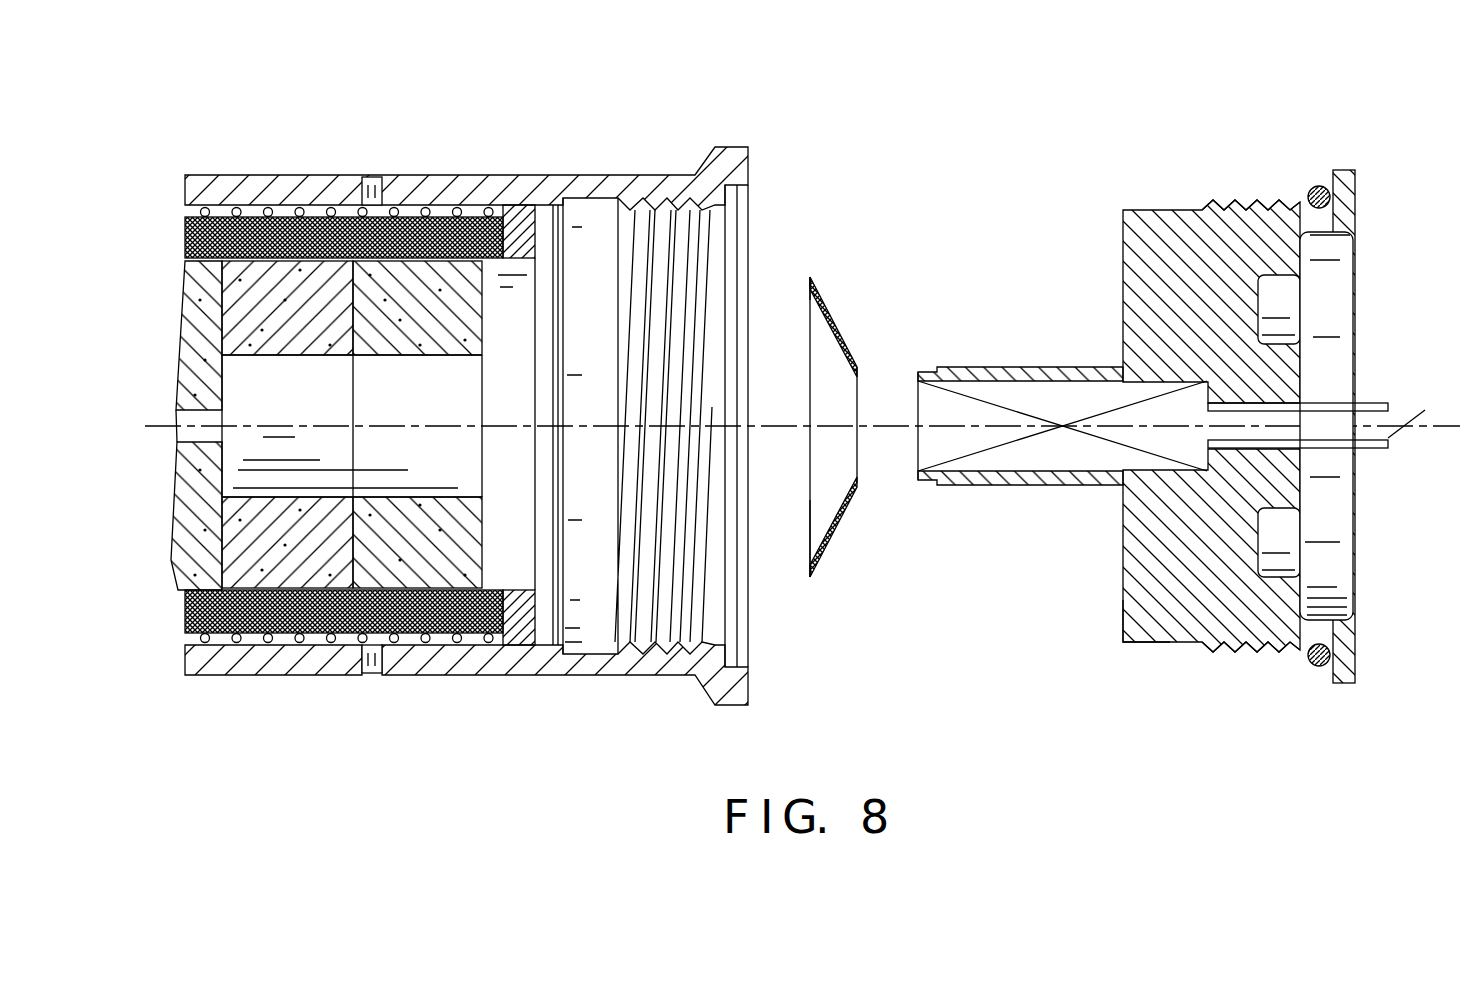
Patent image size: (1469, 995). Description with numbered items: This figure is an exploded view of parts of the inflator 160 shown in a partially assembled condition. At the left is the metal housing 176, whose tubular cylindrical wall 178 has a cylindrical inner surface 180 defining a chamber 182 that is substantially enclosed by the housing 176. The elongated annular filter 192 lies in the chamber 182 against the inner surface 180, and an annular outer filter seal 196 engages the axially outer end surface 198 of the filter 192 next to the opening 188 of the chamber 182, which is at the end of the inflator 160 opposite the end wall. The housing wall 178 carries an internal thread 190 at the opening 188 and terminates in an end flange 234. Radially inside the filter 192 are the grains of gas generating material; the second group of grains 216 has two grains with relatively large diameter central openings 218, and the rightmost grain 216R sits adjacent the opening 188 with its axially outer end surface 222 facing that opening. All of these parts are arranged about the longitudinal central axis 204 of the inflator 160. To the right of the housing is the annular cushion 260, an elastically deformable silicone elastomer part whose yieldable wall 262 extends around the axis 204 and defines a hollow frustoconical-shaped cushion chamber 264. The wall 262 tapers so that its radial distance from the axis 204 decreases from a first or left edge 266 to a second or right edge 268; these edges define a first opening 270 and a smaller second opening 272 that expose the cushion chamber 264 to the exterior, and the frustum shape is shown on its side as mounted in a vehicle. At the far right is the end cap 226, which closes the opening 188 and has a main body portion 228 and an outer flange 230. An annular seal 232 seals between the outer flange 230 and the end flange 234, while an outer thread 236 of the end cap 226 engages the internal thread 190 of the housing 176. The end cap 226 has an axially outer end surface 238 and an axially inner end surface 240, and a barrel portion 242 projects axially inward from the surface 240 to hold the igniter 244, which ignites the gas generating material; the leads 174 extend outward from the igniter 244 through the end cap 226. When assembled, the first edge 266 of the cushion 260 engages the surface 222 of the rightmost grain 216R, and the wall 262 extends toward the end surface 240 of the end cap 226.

The inflator 160 is at (222, 117).
The leads 174 is at (1385, 400).
The housing 176 is at (433, 172).
The tubular cylindrical wall 178 is at (331, 176).
The cylindrical inner surface 180 is at (487, 207).
The chamber 182 is at (530, 300).
The opening 188 is at (716, 290).
The internal thread 190 is at (678, 210).
The annular filter 192 is at (182, 232).
The outer filter seal 196 is at (523, 630).
The axially outer end surface 198 is at (517, 593).
The longitudinal central axis 204 is at (149, 428).
The second group of grains 216 is at (278, 318).
The rightmost grain 216R is at (400, 553).
The central openings 218 is at (247, 392).
The axially outer end surface 222 is at (465, 303).
The end cap 226 is at (1163, 208).
The main body portion 228 is at (1200, 580).
The outer flange 230 is at (1353, 197).
The annular seal 232 is at (1318, 186).
The end flange 234 is at (745, 692).
The outer thread 236 is at (1263, 200).
The axially outer end surface 238 is at (1352, 660).
The axially inner end surface 240 is at (1116, 627).
The barrel portion 242 is at (988, 366).
The igniter 244 is at (1060, 455).
The annular cushion 260 is at (836, 262).
The yieldable wall 262 is at (830, 315).
The cushion chamber 264 is at (823, 412).
The first edge 266 is at (810, 282).
The second edge 268 is at (860, 362).
The first opening 270 is at (811, 508).
The second opening 272 is at (860, 455).